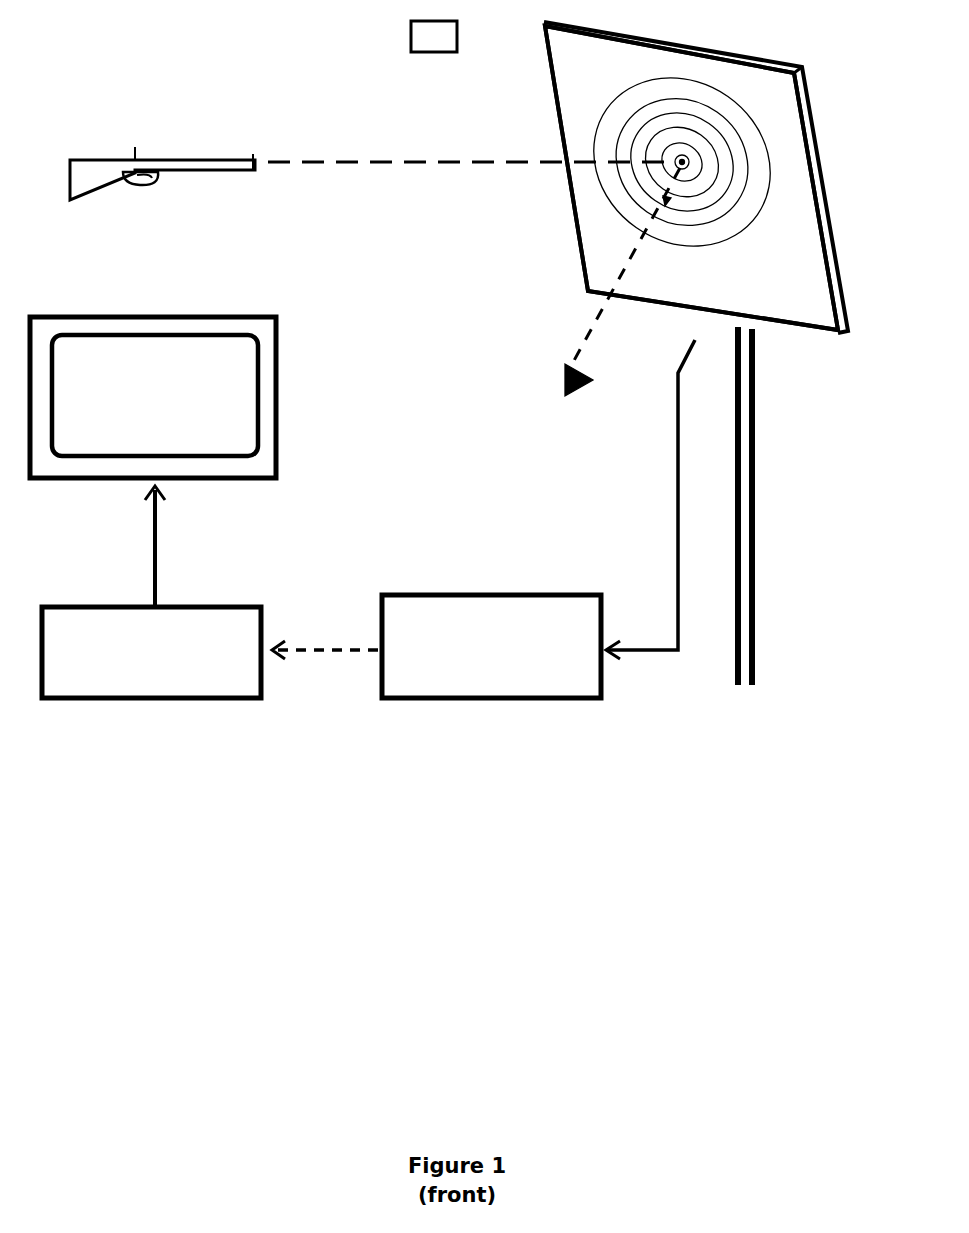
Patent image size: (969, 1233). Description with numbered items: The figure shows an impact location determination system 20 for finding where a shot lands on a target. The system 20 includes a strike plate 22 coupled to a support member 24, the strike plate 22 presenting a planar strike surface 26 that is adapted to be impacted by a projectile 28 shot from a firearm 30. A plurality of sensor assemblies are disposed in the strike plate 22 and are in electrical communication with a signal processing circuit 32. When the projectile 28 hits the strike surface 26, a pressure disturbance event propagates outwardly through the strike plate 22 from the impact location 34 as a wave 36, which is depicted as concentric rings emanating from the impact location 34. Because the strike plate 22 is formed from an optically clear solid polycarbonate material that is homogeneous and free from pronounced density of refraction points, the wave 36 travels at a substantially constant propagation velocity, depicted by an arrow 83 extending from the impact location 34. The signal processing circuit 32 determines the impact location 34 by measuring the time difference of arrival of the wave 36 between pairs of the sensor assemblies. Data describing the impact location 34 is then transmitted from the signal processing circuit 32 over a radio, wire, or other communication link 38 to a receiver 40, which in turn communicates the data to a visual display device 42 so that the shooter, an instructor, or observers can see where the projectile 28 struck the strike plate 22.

The impact location determination system 20 is at (434, 36).
The strike plate 22 is at (707, 177).
The support member 24 is at (771, 506).
The planar strike surface 26 is at (691, 178).
The projectile 28 is at (603, 282).
The firearm 30 is at (367, 167).
The signal processing circuit 32 is at (538, 519).
The impact location 34 is at (688, 160).
The wave 36 is at (697, 75).
The communication link 38 is at (138, 216).
The receiver 40 is at (210, 592).
The visual display device 42 is at (153, 397).
The arrow 83 is at (684, 165).